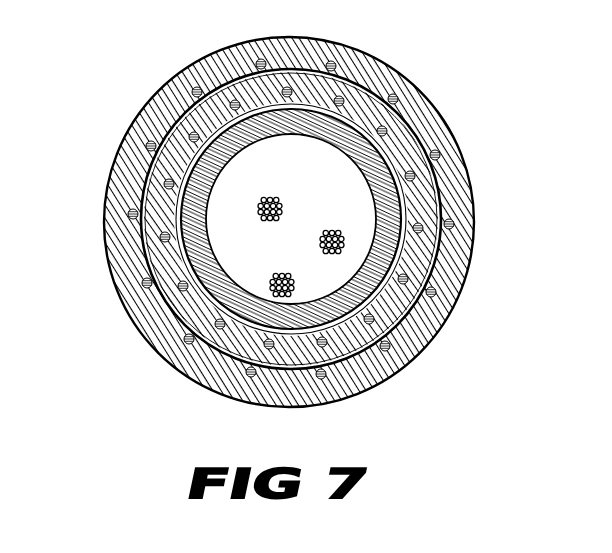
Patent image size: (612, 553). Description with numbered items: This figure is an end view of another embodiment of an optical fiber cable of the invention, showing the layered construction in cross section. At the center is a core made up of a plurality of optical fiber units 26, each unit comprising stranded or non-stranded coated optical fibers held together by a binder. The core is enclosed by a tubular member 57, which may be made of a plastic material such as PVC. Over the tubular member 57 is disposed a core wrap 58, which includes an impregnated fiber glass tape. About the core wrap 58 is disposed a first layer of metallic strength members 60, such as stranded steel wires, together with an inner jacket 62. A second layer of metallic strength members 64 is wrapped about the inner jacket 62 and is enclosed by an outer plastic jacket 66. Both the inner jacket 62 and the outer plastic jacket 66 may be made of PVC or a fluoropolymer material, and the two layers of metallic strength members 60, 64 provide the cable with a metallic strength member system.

The optical fiber units 26 is at (258, 210).
The tubular member 57 is at (214, 278).
The core wrap 58 is at (308, 108).
The first layer of metallic strength members 60 is at (300, 68).
The inner jacket 62 is at (244, 360).
The second layer of metallic strength members 64 is at (443, 236).
The outer plastic jacket 66 is at (122, 288).